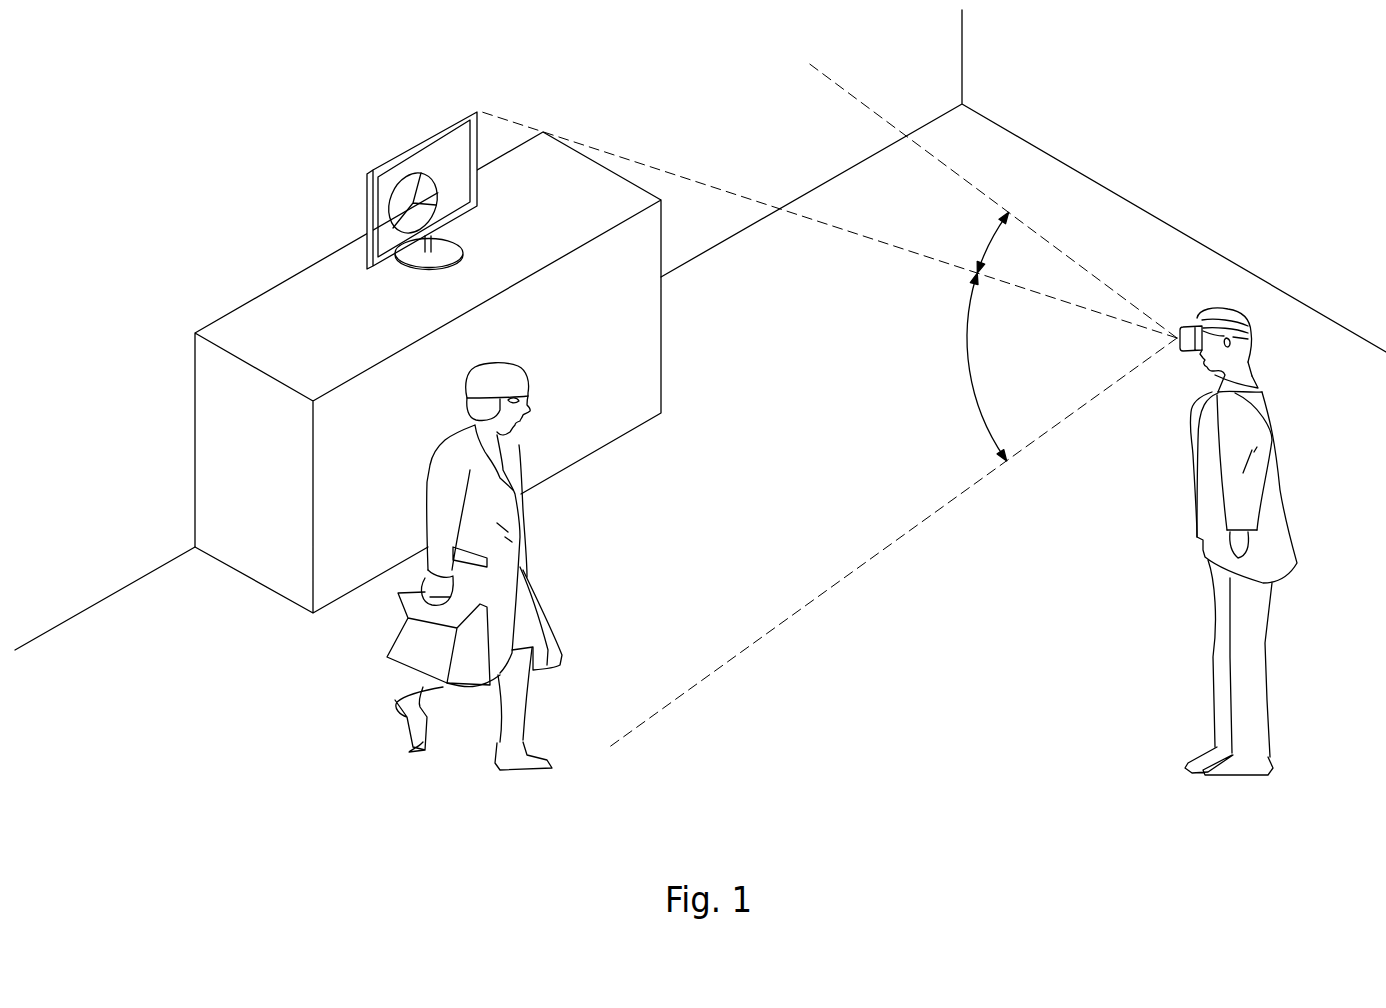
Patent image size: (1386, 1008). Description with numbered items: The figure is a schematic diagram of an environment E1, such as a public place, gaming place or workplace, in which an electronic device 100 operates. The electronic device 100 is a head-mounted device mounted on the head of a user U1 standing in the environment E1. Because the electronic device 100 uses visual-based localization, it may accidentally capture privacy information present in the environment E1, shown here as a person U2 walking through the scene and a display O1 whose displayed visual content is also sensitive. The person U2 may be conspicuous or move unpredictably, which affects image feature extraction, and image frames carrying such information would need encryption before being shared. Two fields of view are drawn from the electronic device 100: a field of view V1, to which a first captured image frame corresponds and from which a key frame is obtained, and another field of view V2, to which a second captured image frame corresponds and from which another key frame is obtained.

The environment E1 is at (93, 119).
The display O1 is at (413, 142).
The electronic device 100 is at (1177, 325).
The user U1 is at (1268, 455).
The person U2 is at (390, 666).
The field of view V1 is at (967, 367).
The field of view V2 is at (982, 242).